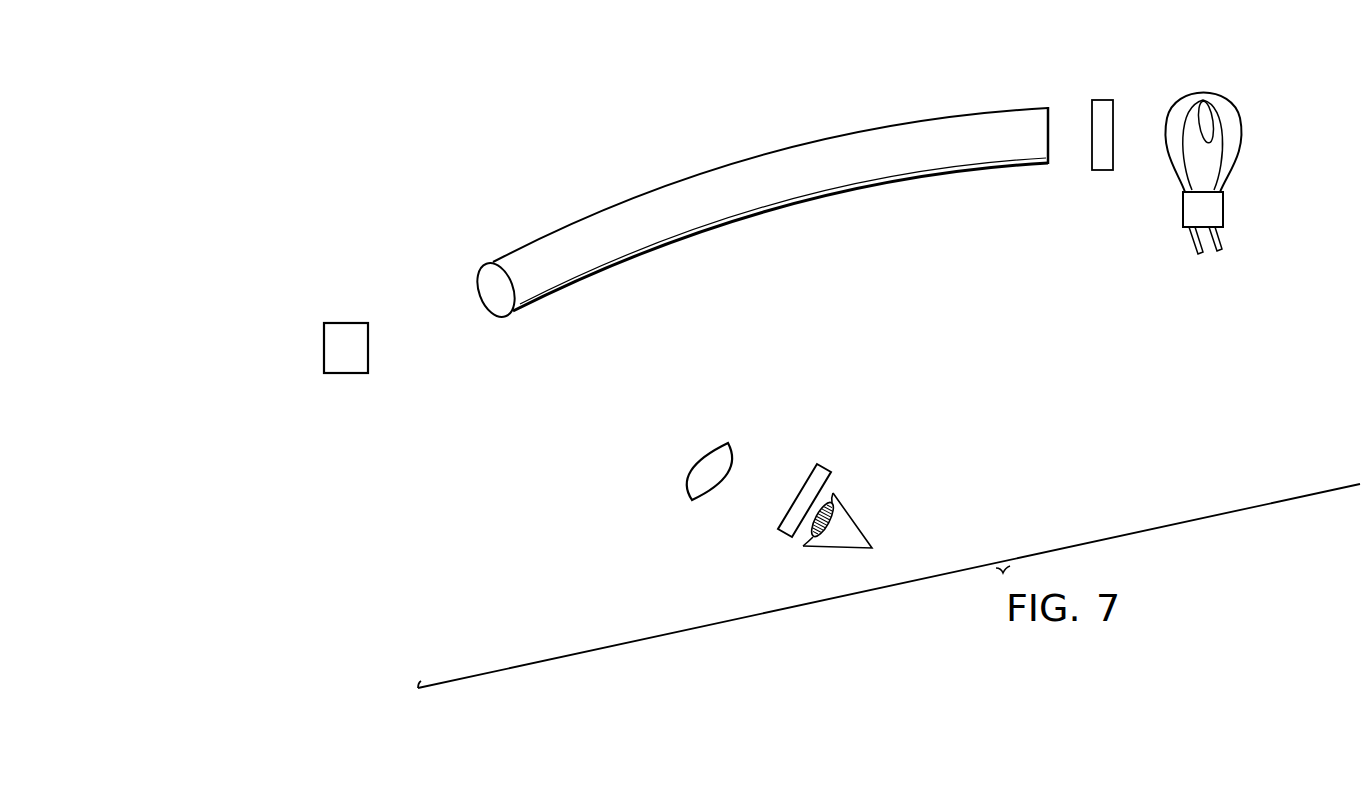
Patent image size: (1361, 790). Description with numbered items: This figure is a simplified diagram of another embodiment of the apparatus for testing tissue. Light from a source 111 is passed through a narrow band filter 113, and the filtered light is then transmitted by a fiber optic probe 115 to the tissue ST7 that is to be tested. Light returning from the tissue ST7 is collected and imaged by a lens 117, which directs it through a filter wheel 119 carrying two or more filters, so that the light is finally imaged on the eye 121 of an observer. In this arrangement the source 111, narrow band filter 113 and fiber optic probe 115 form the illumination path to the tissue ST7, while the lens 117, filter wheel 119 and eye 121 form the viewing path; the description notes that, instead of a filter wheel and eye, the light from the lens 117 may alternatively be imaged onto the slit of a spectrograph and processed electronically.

The source 111 is at (1242, 122).
The narrow band filter 113 is at (1113, 100).
The fiber optic probe 115 is at (745, 158).
The lens 117 is at (723, 441).
The filter wheel 119 is at (780, 530).
The eye 121 is at (860, 523).
The tissue ST7 is at (368, 358).